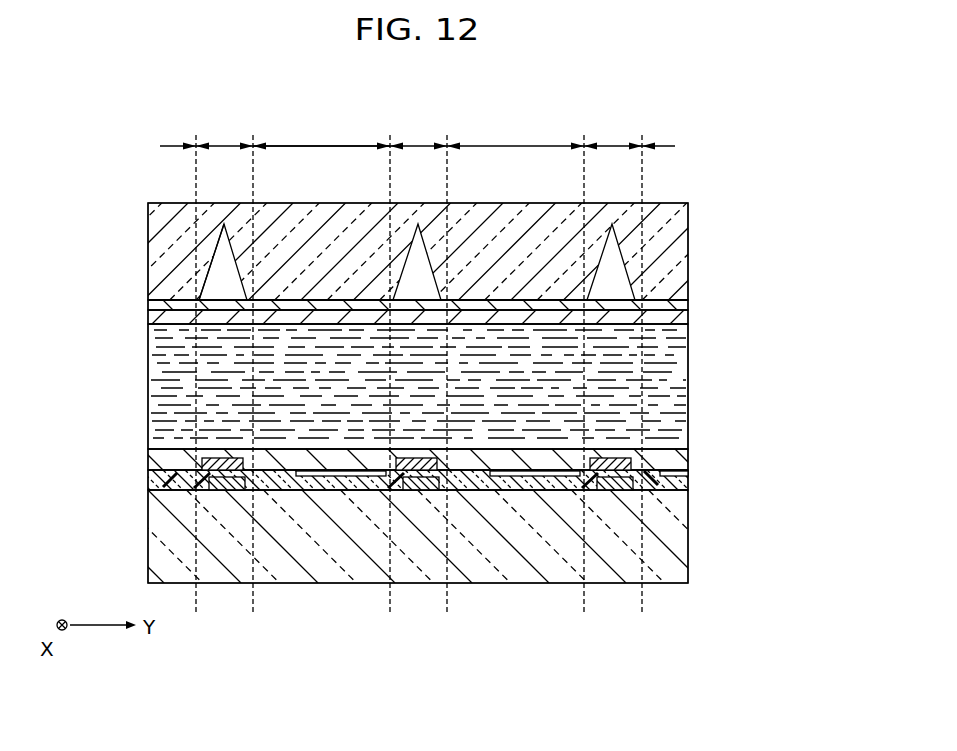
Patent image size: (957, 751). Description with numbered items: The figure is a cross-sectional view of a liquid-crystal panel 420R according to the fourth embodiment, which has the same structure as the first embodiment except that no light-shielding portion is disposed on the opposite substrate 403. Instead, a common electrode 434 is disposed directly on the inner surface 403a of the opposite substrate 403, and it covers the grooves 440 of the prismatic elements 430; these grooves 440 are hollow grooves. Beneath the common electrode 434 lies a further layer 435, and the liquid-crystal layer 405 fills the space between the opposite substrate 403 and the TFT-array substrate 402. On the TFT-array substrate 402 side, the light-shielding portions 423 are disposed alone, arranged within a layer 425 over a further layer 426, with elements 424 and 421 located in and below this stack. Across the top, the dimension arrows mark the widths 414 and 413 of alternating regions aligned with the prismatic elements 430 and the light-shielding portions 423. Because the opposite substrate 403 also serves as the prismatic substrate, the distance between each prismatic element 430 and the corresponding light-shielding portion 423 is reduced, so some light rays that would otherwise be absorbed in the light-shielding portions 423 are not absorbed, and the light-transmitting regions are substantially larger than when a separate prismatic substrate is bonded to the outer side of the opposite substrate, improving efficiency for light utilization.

The liquid-crystal panel 420R is at (712, 158).
The non-light-emitting region width 414 is at (242, 141).
The light-emitting region width 413 is at (322, 141).
The opposite substrate 403 is at (673, 230).
The inner surface of the opposite substrate 403a is at (660, 300).
The prismatic element 430 is at (203, 247).
The groove 440 is at (207, 282).
The common electrode 434 is at (670, 304).
The alignment film 435 is at (677, 317).
The liquid crystal layer 405 is at (167, 394).
The insulating layer 425 is at (690, 458).
The light-shielding portion 423 is at (203, 457).
The insulating layer 426 is at (160, 483).
The common electrode / wiring 424 is at (512, 491).
The lower electrode / wiring 421 is at (605, 491).
The TFT-array substrate 402 is at (672, 525).